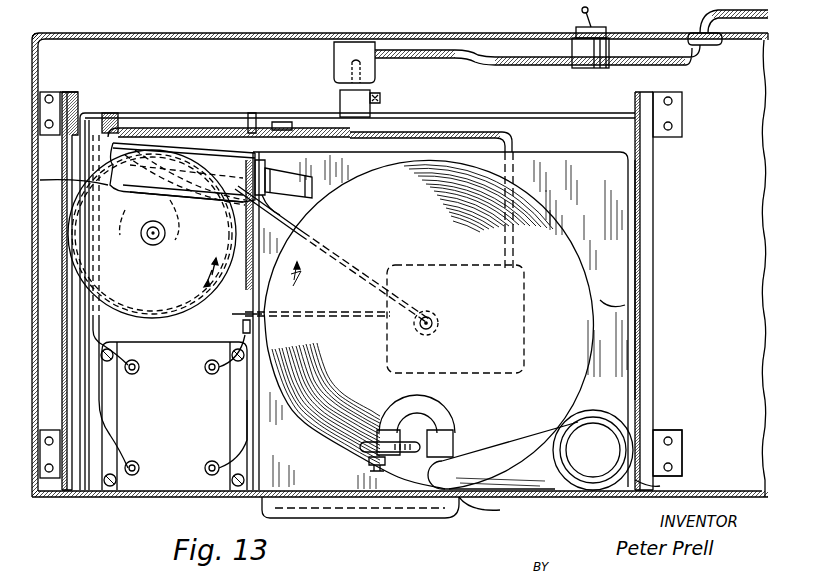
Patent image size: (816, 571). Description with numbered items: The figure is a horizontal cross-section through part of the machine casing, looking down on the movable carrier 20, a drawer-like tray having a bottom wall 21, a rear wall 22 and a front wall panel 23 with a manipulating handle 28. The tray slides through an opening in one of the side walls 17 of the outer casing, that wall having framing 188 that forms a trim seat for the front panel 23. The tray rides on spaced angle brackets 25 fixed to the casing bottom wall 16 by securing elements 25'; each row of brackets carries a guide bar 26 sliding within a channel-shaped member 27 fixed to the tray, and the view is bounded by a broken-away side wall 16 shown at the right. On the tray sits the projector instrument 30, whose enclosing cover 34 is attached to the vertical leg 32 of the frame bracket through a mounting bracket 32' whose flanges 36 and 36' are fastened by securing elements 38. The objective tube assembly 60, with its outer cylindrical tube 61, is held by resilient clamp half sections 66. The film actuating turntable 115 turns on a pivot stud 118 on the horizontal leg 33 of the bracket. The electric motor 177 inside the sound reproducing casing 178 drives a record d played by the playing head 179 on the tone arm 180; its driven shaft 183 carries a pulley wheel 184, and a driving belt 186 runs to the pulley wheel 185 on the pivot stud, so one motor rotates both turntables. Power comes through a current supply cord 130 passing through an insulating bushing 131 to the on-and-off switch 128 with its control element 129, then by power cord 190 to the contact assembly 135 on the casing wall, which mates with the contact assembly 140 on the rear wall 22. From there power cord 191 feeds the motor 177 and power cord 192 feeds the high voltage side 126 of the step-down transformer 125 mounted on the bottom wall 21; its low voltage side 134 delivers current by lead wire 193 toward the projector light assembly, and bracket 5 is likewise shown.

The bracket 5 is at (680, 452).
The bottom wall 16 is at (756, 368).
The side walls 17 is at (196, 33).
The movable carrier 20 is at (639, 256).
The bottom wall 21 is at (590, 133).
The rear wall 22 is at (535, 124).
The front wall panel 23 is at (487, 500).
The angle brackets 25 is at (375, 267).
The securing elements 25' is at (388, 256).
The guide bar 26 is at (66, 317).
The channel-shaped member 27 is at (74, 360).
The manipulating handle 28 is at (355, 512).
The projector instrument 30 is at (200, 207).
The vertical leg 32 is at (182, 146).
The mounting bracket 32' is at (185, 147).
The horizontal leg 33 is at (122, 226).
The enclosing cover 34 is at (117, 183).
The flange 36 is at (270, 103).
The flange 36' is at (116, 200).
The securing elements 38 is at (85, 140).
The objective tube assembly 60 is at (302, 170).
The outer cylindrical tube 61 is at (273, 192).
The clamp half sections 66 is at (285, 205).
The turntable 115 is at (203, 299).
The pivot stud 118 is at (155, 240).
The step-down transformer 125 is at (178, 420).
The high voltage side 126 is at (212, 374).
The on-and-off switch 128 is at (592, 70).
The control element 129 is at (592, 20).
The current supply cord 130 is at (710, 18).
The insulating bushing 131 is at (715, 47).
The low voltage side 134 is at (131, 374).
The contact assembly 135 is at (330, 57).
The contact assembly 140 is at (337, 100).
The electric motor 177 is at (445, 265).
The sound reproducing casing 178 is at (610, 305).
The playing head 179 is at (362, 458).
The tone arm 180 is at (510, 448).
The driven shaft 183 is at (433, 323).
The pulley wheel 184 is at (438, 333).
The pulley wheel 185 is at (206, 318).
The driving belt 186 is at (344, 262).
The framing 188 is at (656, 488).
The power cord 190 is at (527, 62).
The power cord 191 is at (442, 135).
The power cord 192 is at (300, 128).
The lead wire 193 is at (105, 318).
The sound record d is at (520, 215).